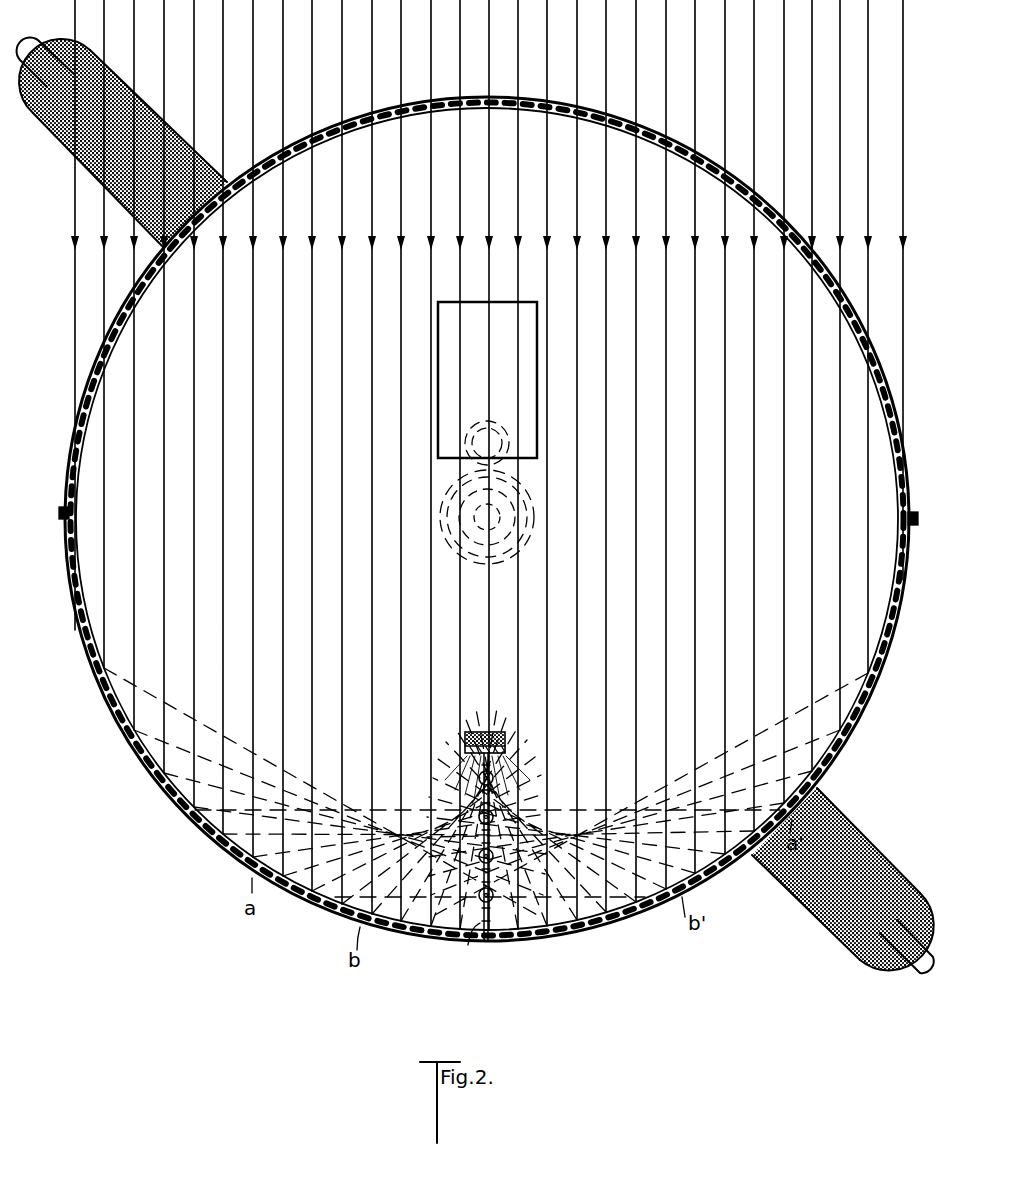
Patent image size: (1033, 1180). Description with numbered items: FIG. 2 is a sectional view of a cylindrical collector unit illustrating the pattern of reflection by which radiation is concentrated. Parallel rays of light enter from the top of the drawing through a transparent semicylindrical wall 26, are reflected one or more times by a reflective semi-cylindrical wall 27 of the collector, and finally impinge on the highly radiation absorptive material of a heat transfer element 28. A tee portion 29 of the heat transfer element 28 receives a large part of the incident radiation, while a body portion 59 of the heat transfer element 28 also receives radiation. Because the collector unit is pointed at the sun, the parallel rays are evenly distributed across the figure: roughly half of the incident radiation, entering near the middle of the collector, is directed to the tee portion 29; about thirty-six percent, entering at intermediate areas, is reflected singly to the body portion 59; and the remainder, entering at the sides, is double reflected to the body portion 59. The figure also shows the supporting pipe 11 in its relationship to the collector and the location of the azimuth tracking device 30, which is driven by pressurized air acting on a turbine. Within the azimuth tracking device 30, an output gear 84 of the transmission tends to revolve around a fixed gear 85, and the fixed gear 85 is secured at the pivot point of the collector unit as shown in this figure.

The supporting pipe 11 is at (70, 152).
The transparent semicylindrical wall 26 is at (68, 460).
The reflective semi-cylindrical wall 27 is at (242, 862).
The heat transfer element 28 is at (468, 945).
The tee portion 29 is at (460, 736).
The azimuth tracking device 30 is at (436, 373).
The body portion 59 is at (490, 823).
The output gear 84 is at (511, 465).
The fixed gear 85 is at (528, 533).